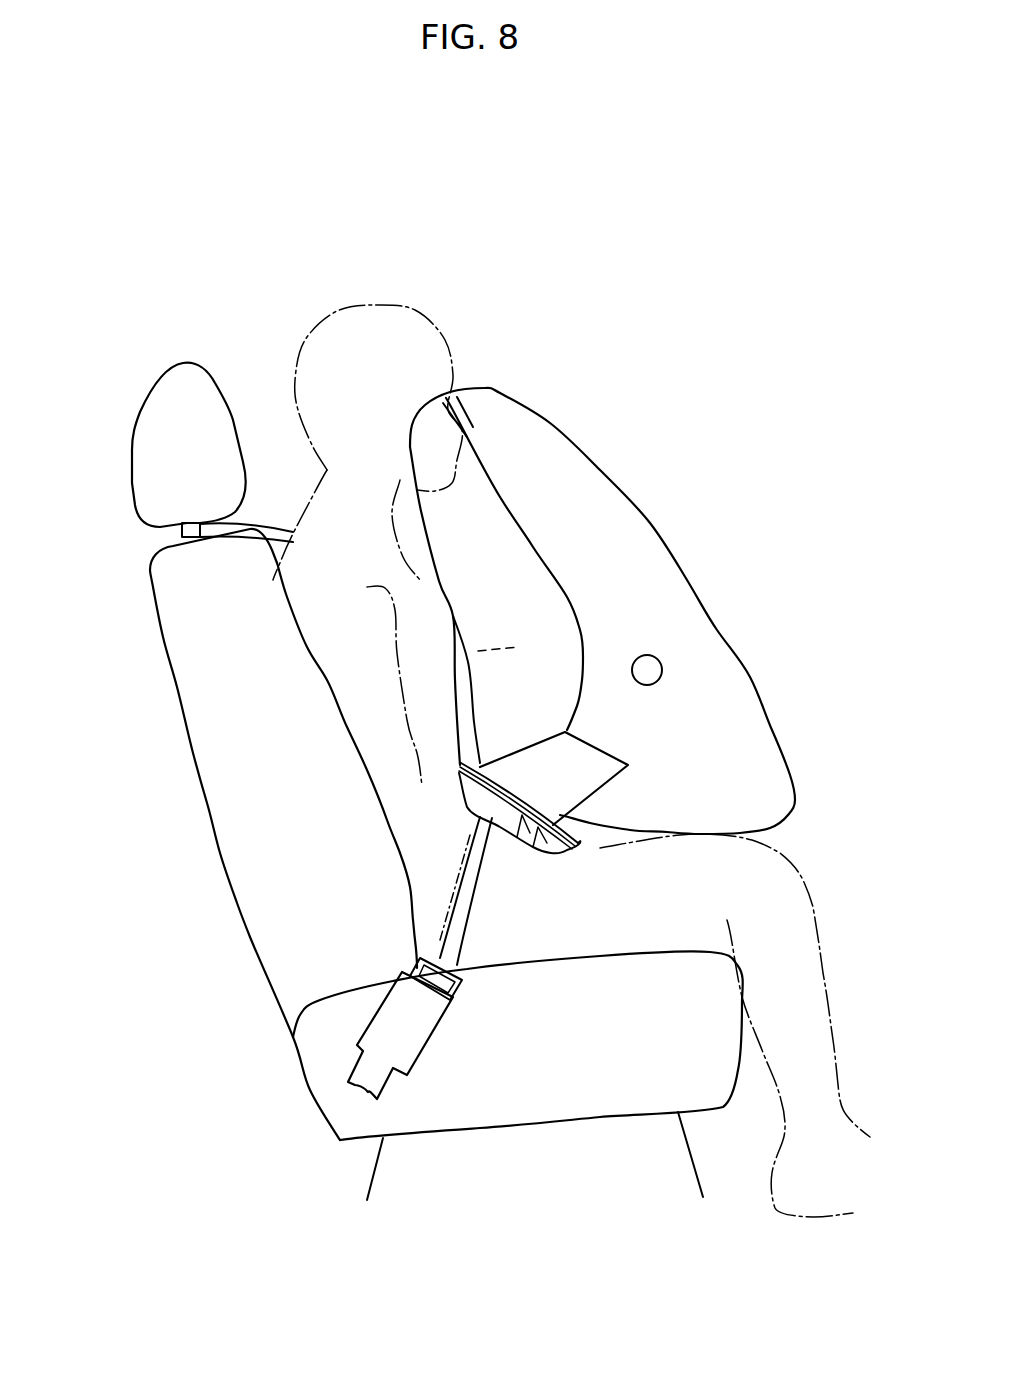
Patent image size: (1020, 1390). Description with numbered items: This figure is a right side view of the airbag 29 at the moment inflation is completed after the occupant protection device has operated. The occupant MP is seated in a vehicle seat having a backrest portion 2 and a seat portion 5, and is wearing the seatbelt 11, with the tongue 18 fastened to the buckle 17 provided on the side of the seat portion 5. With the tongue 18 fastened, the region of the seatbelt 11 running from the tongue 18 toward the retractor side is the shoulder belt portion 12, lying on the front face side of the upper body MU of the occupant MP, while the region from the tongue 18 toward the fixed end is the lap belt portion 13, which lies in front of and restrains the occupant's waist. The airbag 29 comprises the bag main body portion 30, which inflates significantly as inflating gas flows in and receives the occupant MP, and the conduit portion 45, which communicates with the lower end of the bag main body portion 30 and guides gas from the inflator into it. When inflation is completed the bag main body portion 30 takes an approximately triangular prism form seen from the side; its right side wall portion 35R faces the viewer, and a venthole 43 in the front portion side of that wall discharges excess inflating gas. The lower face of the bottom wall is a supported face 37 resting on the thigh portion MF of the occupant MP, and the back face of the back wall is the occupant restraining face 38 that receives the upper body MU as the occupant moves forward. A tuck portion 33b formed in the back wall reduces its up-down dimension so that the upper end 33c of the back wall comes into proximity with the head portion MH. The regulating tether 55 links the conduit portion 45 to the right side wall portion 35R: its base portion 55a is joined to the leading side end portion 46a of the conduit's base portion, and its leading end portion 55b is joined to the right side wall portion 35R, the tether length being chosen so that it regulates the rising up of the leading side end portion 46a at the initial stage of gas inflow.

The backrest portion 2 is at (253, 798).
The seat portion 5 is at (618, 1087).
The seatbelt 11 is at (173, 850).
The shoulder belt portion 12 is at (457, 862).
The lap belt portion 13 is at (467, 913).
The buckle 17 is at (380, 1027).
The tongue 18 is at (457, 988).
The airbag 29 is at (107, 640).
The bag main body portion 30 is at (433, 549).
The tuck portion 33b is at (502, 632).
The upper end of back wall portion 33c is at (407, 423).
The right side wall portion 35R is at (607, 588).
The supported face 37 is at (580, 846).
The occupant restraining face 38 is at (467, 585).
The venthole 43 is at (653, 670).
The conduit portion 45 is at (458, 782).
The leading side end portion of base portion 46a is at (525, 840).
The regulating tether 55 is at (582, 780).
The base portion of regulating tether 55a is at (540, 847).
The leading end portion of regulating tether 55b is at (618, 748).
The occupant MP is at (357, 340).
The head portion MH is at (390, 323).
The upper body MU is at (427, 670).
The thigh portion MF is at (643, 897).